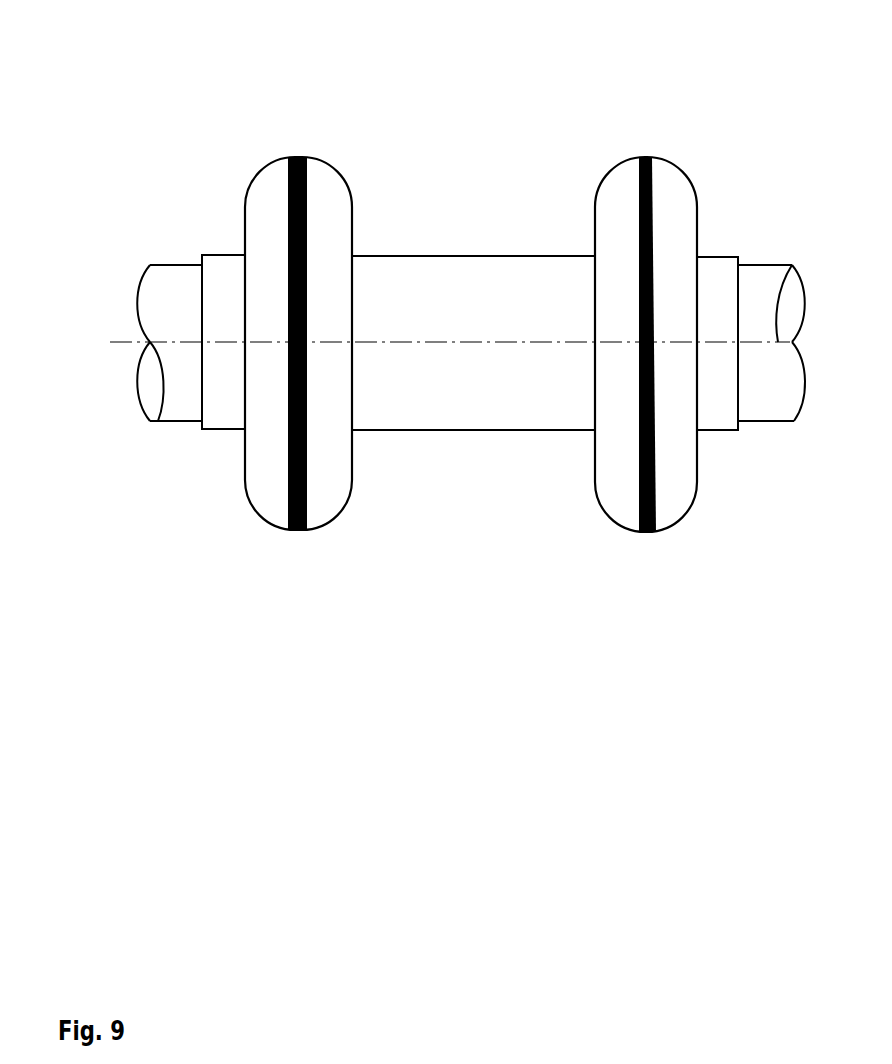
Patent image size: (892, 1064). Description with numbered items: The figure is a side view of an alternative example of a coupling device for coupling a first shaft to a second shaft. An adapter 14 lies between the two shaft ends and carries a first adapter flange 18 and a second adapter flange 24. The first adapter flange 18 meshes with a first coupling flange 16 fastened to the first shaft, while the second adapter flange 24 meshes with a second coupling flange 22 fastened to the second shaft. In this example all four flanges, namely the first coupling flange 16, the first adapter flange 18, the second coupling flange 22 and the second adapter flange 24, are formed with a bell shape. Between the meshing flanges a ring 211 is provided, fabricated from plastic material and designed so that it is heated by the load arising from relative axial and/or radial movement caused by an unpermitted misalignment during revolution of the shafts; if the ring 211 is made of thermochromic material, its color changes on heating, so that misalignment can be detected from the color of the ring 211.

The adapter 14 is at (458, 412).
The first coupling flange 16 is at (265, 507).
The first adapter flange 18 is at (328, 508).
The second coupling flange 22 is at (683, 181).
The second adapter flange 24 is at (618, 181).
The ring 211 is at (300, 163).